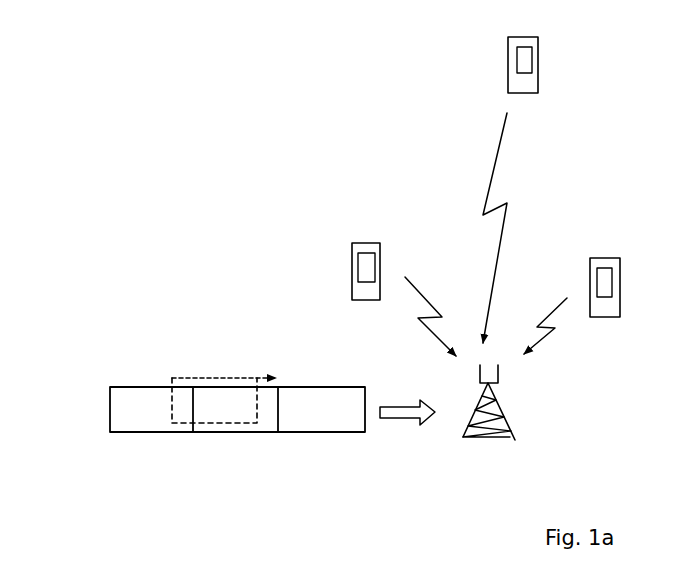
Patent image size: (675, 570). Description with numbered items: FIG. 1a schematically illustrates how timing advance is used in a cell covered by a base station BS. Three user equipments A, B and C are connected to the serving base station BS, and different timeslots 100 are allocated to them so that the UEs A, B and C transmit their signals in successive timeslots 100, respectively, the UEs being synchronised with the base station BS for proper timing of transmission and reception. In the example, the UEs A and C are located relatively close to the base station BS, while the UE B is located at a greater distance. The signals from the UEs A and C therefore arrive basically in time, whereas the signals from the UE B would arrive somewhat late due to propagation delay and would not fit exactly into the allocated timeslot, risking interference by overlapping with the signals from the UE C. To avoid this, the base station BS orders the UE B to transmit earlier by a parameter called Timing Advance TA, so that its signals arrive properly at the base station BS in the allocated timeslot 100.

The timeslots 100 is at (138, 343).
The Timing Advance TA is at (272, 369).
The base station BS is at (508, 418).
The UE A is at (572, 305).
The UE B is at (508, 188).
The UE C is at (388, 297).